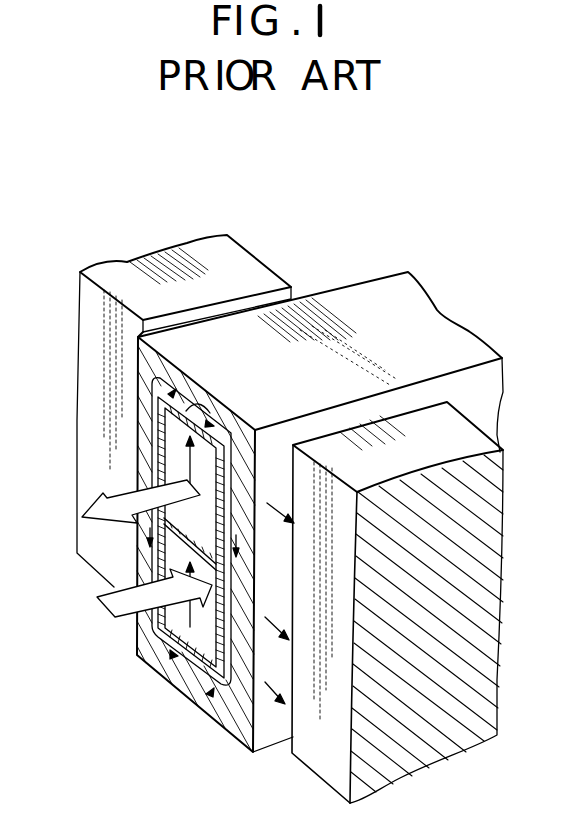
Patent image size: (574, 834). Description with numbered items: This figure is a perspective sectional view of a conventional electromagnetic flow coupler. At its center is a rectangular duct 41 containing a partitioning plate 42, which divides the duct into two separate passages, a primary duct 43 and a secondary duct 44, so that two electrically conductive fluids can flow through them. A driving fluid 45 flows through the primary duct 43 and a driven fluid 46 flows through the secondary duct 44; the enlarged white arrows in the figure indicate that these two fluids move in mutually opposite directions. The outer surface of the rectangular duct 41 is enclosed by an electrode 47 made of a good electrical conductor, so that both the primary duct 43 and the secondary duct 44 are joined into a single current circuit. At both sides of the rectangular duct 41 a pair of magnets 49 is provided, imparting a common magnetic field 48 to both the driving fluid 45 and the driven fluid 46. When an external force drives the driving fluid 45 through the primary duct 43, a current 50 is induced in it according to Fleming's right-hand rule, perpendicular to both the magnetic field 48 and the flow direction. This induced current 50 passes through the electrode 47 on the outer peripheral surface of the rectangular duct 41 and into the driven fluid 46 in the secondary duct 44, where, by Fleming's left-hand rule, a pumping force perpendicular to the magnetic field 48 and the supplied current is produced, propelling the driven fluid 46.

The rectangular duct 41 is at (172, 652).
The partitioning plate 42 is at (183, 537).
The primary duct 43 is at (207, 533).
The secondary duct 44 is at (203, 640).
The driving fluid 45 is at (105, 495).
The driven fluid 46 is at (100, 650).
The electrode 47 is at (198, 707).
The common magnetic field 48 is at (292, 478).
The magnets 49 is at (313, 772).
The current 50 is at (187, 460).